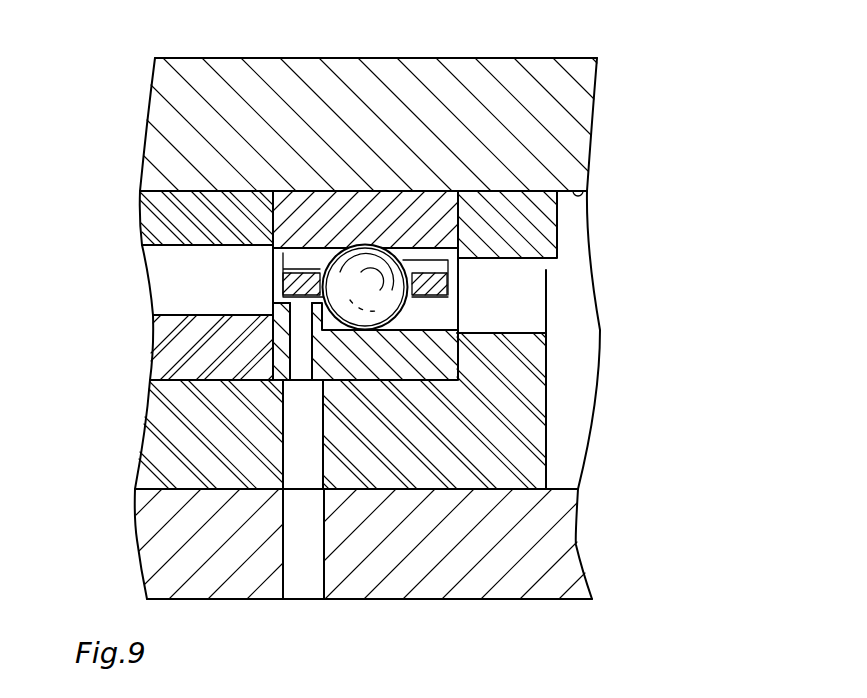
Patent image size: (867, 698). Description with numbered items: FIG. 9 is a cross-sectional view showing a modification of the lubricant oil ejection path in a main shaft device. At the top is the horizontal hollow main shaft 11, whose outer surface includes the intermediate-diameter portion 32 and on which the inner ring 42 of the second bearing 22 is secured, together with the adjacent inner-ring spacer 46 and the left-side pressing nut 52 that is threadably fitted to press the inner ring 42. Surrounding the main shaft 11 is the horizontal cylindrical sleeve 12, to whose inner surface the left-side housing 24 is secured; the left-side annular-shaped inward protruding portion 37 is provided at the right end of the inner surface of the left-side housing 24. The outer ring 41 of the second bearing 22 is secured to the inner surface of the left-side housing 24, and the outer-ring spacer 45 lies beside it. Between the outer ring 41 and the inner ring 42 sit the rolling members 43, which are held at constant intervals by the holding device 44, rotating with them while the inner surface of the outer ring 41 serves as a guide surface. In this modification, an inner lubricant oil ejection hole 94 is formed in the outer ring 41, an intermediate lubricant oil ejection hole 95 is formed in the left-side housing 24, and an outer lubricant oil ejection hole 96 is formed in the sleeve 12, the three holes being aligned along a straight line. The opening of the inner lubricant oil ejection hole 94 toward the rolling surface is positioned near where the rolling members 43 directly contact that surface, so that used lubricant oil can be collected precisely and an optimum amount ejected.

The main shaft 11 is at (152, 118).
The sleeve 12 is at (562, 535).
The second bearing 22 is at (354, 188).
The left-side housing 24 is at (532, 452).
The intermediate-diameter portion 32 is at (588, 192).
The left-side annular-shaped inward protruding portion 37 is at (537, 350).
The outer ring 41 is at (371, 362).
The inner ring 42 is at (425, 216).
The rolling members 43 is at (348, 258).
The holding device 44 is at (447, 285).
The outer-ring spacer 45 is at (153, 338).
The inner-ring spacer 46 is at (152, 223).
The left-side pressing nut 52 is at (557, 225).
The inner lubricant oil ejection hole 94 is at (298, 352).
The intermediate lubricant oil ejection hole 95 is at (287, 445).
The outer lubricant oil ejection hole 96 is at (287, 557).